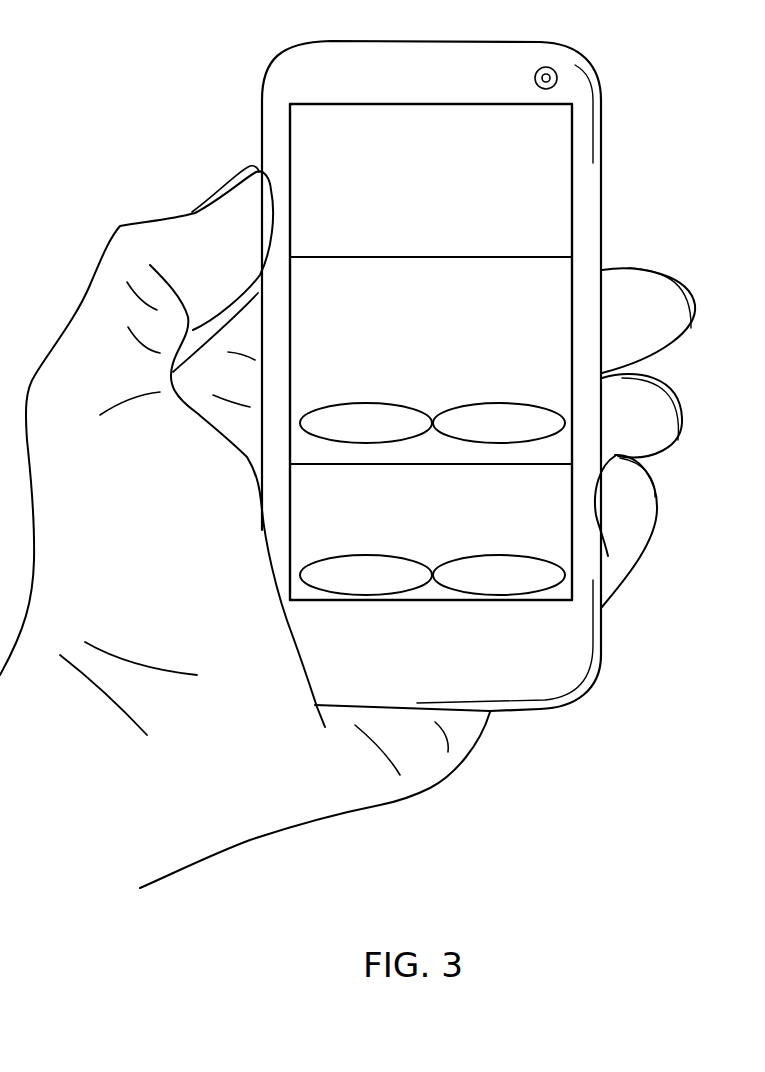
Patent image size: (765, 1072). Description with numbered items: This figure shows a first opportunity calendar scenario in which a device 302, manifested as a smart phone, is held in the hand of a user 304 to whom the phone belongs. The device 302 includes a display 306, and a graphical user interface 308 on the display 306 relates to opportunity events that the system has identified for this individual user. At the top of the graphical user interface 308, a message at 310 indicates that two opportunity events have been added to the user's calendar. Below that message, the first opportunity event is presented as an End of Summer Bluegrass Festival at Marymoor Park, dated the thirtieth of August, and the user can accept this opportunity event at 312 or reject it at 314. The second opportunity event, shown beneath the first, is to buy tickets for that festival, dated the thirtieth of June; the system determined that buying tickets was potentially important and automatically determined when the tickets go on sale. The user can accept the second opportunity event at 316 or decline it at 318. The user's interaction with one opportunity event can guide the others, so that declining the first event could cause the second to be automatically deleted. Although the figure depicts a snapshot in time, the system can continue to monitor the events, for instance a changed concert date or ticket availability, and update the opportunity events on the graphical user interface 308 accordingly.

The device 302 is at (520, 43).
The user 304 is at (115, 237).
The display 306 is at (300, 104).
The graphical user interface 308 is at (413, 115).
The notification message 310 is at (553, 189).
The accept option 312 is at (345, 404).
The reject option 314 is at (466, 404).
The accept option 316 is at (385, 595).
The decline option 318 is at (505, 595).